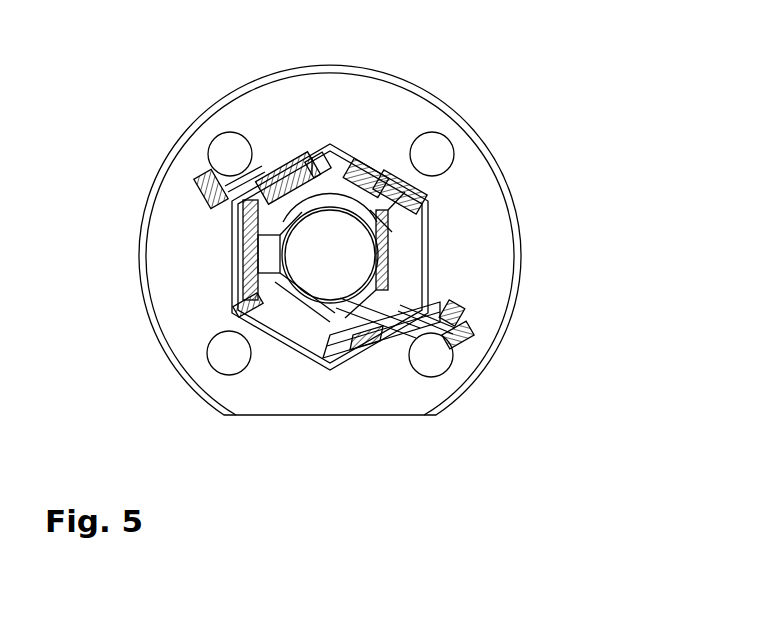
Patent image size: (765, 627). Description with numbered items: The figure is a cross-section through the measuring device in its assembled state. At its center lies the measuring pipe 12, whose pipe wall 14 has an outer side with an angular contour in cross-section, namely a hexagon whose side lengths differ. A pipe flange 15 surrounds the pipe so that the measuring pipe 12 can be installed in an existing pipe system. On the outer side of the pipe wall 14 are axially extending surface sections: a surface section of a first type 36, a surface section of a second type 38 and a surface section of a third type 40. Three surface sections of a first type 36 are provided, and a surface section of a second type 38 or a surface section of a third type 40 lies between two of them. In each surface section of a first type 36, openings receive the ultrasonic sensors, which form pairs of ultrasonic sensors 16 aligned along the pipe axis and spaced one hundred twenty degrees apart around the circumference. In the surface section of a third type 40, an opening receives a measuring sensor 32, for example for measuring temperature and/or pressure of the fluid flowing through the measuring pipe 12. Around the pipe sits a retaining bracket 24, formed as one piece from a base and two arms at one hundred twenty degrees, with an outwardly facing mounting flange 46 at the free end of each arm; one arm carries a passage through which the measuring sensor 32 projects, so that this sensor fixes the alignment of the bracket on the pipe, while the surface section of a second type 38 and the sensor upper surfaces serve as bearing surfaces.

The measuring pipe 12 is at (423, 195).
The pipe wall 14 is at (430, 267).
The pipe flange 15 is at (472, 338).
The pair of ultrasonic sensors 16 is at (398, 172).
The retaining bracket 24 is at (372, 170).
The measuring sensor 32 is at (297, 192).
The surface section of a first type 36 is at (338, 158).
The surface section of a second type 38 is at (421, 232).
The surface section of a third type 40 is at (312, 157).
The mounting flange 46 is at (207, 185).